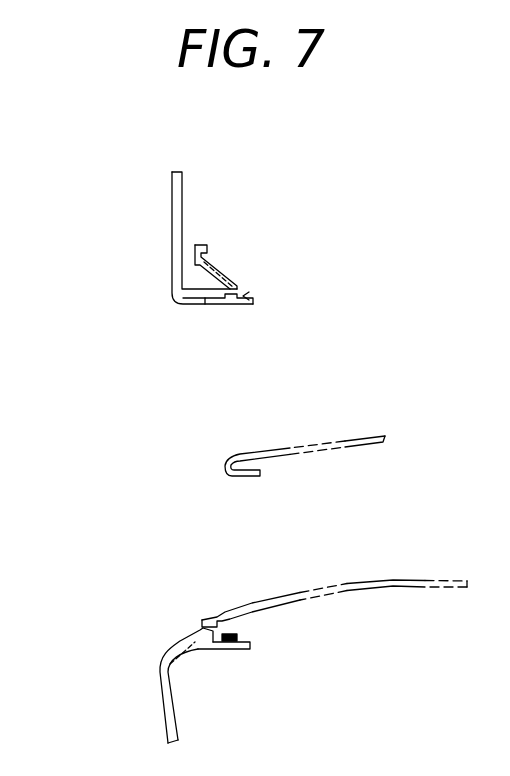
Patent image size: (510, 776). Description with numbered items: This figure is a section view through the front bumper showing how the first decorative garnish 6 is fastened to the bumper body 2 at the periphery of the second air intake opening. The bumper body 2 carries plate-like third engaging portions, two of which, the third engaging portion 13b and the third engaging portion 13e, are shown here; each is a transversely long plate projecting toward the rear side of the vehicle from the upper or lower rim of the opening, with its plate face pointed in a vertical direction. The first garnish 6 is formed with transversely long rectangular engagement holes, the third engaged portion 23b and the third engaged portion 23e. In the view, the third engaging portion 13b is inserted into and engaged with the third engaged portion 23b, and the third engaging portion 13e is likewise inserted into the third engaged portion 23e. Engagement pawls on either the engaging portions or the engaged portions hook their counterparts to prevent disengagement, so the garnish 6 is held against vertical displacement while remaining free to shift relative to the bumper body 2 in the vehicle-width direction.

The front bumper body 2 is at (172, 247).
The third engaging portion 13b is at (243, 296).
The third engaged portion 23b is at (250, 297).
The first decorative garnish 6 is at (253, 305).
The third engaging portion 13e is at (232, 637).
The third engaged portion 23e is at (222, 628).